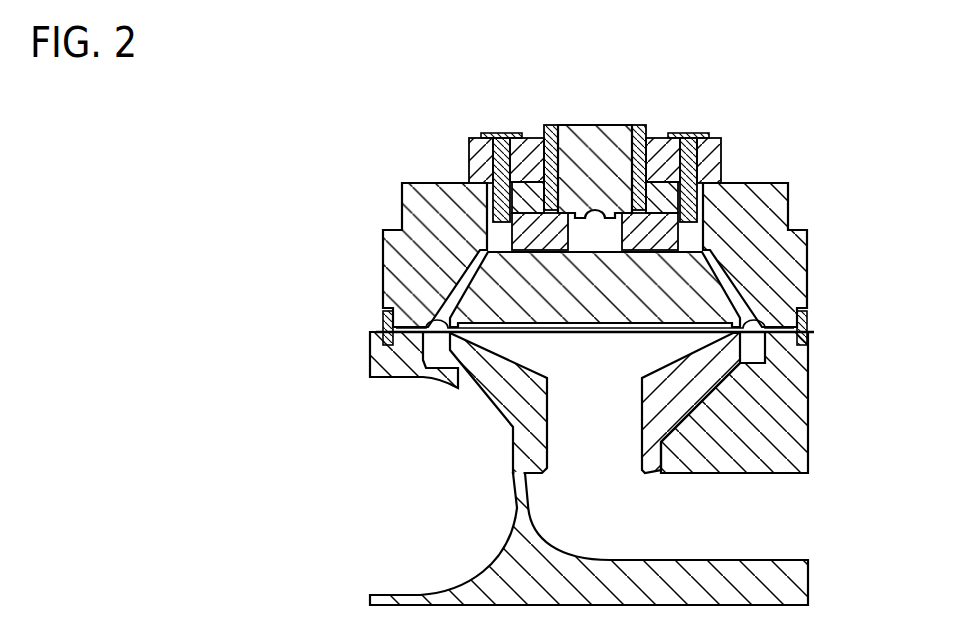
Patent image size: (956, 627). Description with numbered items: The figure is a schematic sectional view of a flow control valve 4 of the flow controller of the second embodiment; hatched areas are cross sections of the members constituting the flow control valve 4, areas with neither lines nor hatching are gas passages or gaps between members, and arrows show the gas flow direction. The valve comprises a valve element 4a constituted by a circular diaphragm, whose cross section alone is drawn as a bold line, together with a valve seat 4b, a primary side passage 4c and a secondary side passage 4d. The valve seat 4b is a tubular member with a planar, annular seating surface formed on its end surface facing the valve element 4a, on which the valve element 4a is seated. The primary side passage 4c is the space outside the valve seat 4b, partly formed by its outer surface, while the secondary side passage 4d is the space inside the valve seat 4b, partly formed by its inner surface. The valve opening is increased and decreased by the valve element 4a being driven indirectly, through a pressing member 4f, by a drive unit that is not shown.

The flow control valve 4 is at (753, 144).
The valve element 4a is at (593, 326).
The valve seat 4b is at (677, 385).
The primary side passage 4c is at (481, 395).
The secondary side passage 4d is at (593, 385).
The pressing member 4f is at (483, 284).